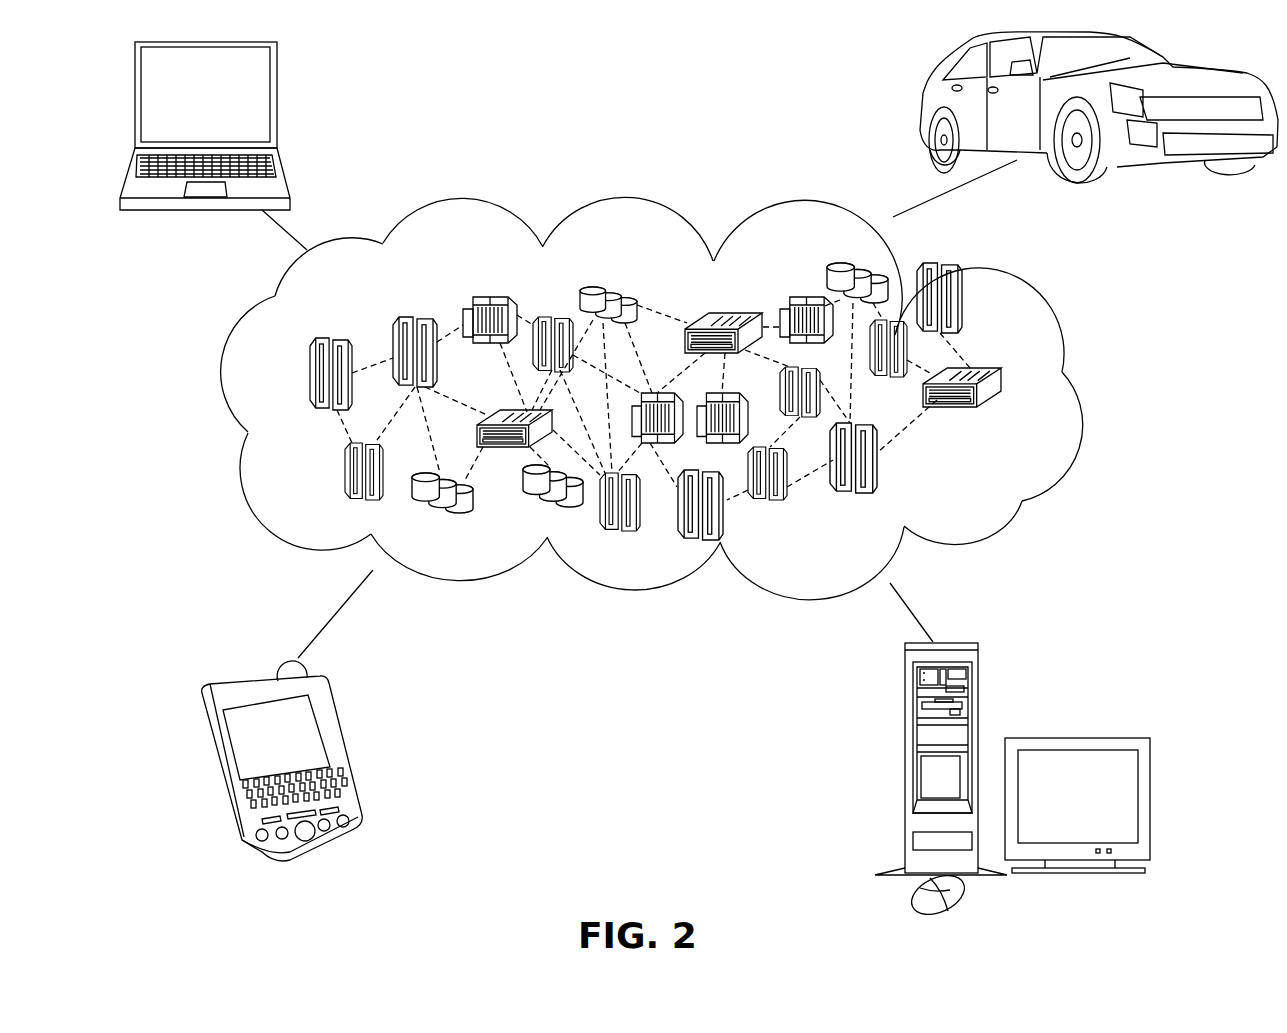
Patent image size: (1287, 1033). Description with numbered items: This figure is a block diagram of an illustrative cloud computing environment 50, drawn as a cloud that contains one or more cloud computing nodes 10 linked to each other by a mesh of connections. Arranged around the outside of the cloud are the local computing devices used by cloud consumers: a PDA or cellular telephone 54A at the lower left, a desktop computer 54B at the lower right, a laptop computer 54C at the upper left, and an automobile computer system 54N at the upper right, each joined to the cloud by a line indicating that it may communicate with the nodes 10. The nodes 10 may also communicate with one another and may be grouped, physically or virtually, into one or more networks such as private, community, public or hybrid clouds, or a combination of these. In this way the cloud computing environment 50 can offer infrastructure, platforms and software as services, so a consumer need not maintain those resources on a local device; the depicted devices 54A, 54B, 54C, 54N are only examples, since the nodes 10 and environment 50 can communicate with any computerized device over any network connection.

The cloud computing nodes 10 is at (699, 477).
The cloud computing environment 50 is at (1072, 390).
The PDA or cellular telephone 54A is at (332, 718).
The desktop computer 54B is at (905, 702).
The laptop computer 54C is at (277, 78).
The automobile computer system 54N is at (927, 98).